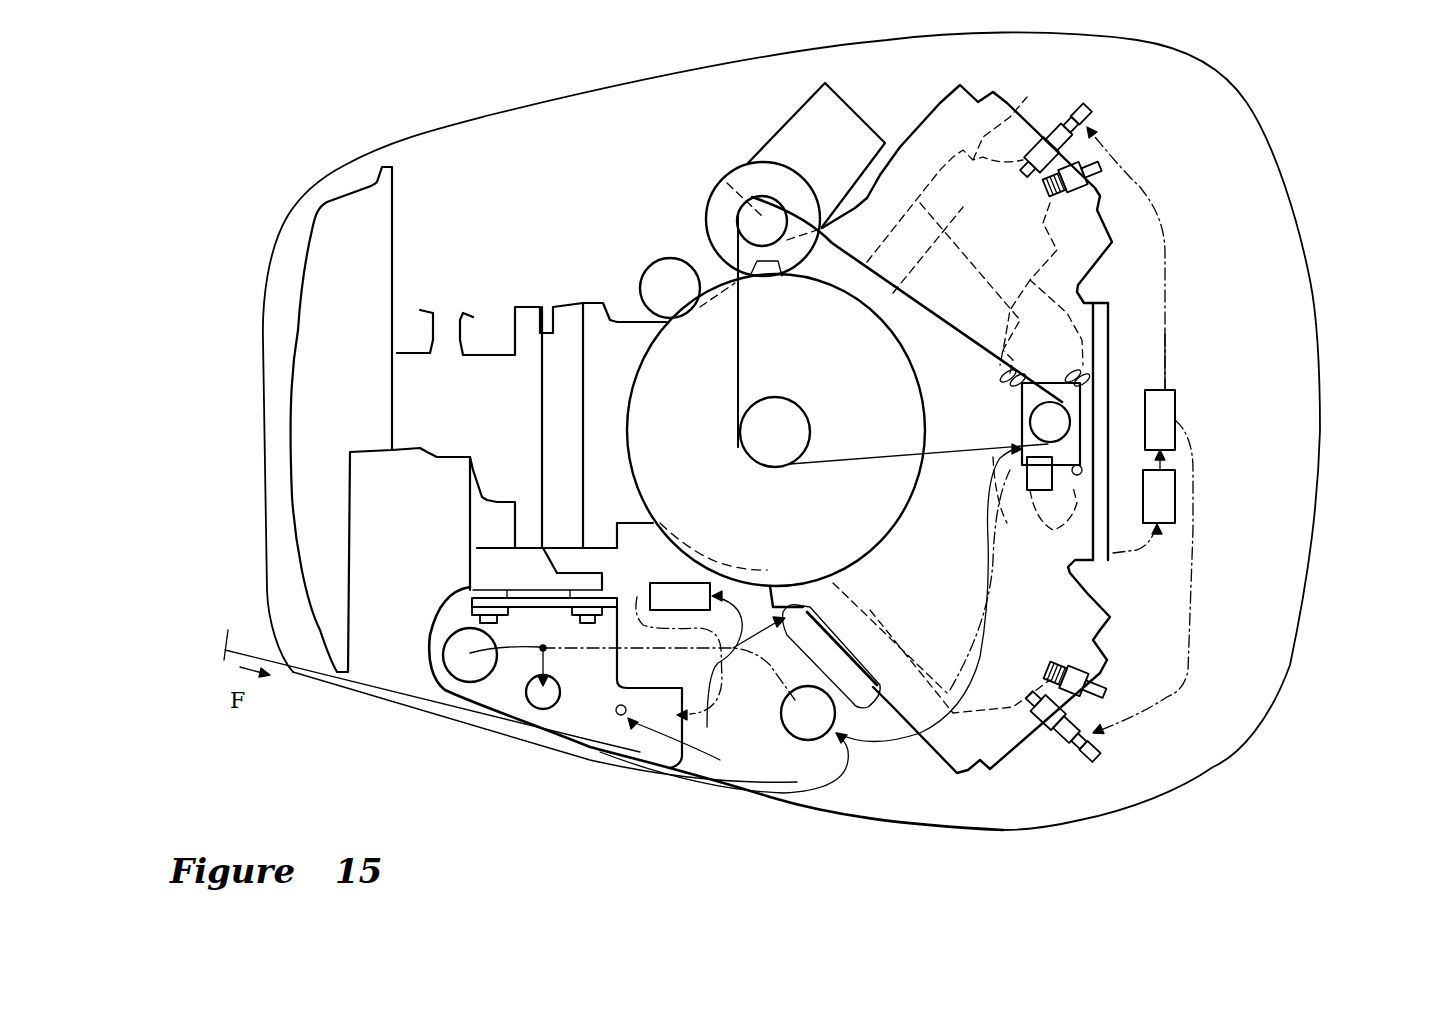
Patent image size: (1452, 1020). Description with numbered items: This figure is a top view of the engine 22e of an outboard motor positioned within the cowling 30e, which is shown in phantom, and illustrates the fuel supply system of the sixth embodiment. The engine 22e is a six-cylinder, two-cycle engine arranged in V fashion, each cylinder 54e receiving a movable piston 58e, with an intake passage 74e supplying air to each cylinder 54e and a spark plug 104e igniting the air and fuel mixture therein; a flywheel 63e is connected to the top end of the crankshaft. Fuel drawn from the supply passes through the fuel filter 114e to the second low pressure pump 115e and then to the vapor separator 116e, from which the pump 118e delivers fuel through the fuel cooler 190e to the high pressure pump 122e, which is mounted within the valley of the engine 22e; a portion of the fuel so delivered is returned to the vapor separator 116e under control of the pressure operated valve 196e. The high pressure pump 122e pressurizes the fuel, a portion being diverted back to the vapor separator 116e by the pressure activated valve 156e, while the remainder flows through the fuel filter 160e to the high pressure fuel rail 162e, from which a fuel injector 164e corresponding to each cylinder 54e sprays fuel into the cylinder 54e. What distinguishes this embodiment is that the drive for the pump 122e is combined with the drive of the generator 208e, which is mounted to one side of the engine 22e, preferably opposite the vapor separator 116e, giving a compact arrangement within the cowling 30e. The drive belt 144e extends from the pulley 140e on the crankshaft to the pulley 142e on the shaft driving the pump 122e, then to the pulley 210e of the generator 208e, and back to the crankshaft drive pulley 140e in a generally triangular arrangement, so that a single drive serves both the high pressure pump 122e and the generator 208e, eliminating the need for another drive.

The engine 22e is at (1288, 280).
The cowling 30e is at (1303, 607).
The cylinder 54e is at (1015, 113).
The piston 58e is at (958, 405).
The flywheel 63e is at (680, 313).
The passage 74e is at (445, 438).
The spark plug 104e is at (1090, 180).
The fuel filter 114e is at (803, 723).
The second low pressure pump 115e is at (685, 595).
The vapor separator 116e is at (607, 733).
The pump 118e is at (457, 668).
The high pressure pump 122e is at (1073, 403).
The crankshaft drive pulley 140e is at (755, 443).
The pulley 142e is at (1062, 422).
The drive belt 144e is at (873, 300).
The pressure activated valve 156e is at (1047, 480).
The fuel filter 160e is at (1175, 493).
The high pressure fuel rail 162e is at (1175, 405).
The fuel injector 164e is at (1093, 121).
The fuel cooler 190e is at (857, 677).
The valve 196e is at (543, 705).
The generator 208e is at (727, 195).
The pulley 210e is at (753, 221).